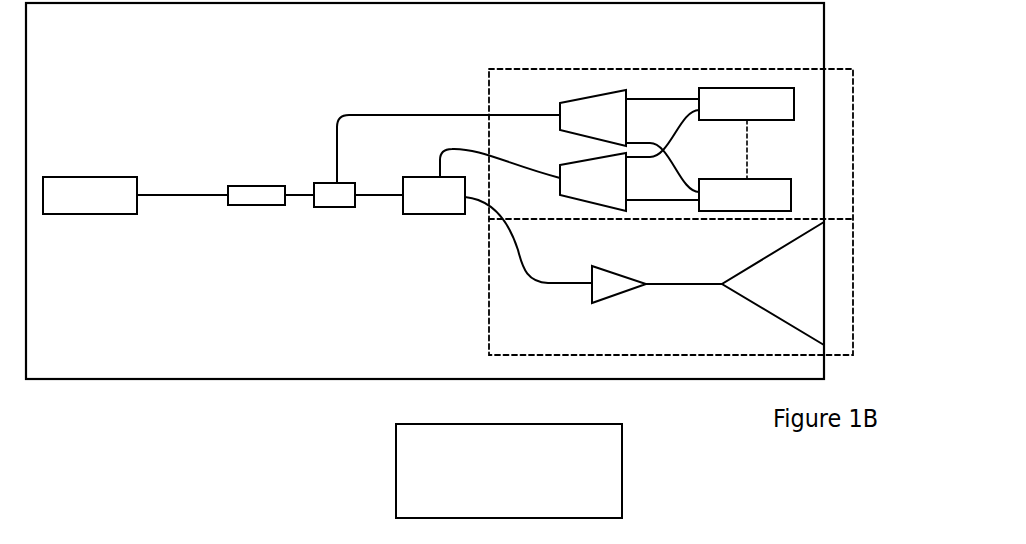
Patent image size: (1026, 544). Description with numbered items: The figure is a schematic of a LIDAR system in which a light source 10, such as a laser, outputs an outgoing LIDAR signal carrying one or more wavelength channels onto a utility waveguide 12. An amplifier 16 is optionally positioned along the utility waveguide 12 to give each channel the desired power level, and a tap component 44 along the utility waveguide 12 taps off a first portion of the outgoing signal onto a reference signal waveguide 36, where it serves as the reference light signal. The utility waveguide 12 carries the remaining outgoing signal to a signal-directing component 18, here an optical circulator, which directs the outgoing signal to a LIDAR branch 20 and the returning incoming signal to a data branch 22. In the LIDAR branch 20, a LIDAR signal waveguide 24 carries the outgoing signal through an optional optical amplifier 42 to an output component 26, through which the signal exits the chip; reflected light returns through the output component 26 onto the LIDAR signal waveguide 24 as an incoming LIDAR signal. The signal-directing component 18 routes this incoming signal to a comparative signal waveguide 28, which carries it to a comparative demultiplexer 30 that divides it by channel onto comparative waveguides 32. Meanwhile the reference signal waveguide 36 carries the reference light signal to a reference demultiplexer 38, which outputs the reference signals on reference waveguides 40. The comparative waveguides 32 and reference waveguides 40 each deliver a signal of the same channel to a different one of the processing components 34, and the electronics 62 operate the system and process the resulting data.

The light source 10 is at (92, 177).
The utility waveguide 12 is at (298, 205).
The amplifier 16 is at (242, 186).
The tap component 44 is at (326, 183).
The signal-directing component 18 is at (422, 214).
The reference signal waveguide 36 is at (420, 115).
The comparative demultiplexer 30 is at (575, 162).
The comparative signal waveguide 28 is at (503, 172).
The reference demultiplexer 38 is at (580, 95).
The comparative waveguides 32 is at (674, 123).
The reference waveguides 40 is at (665, 99).
The processing components 34 is at (758, 88).
The data branch 22 is at (842, 69).
The LIDAR branch 20 is at (853, 246).
The LIDAR signal waveguide 24 is at (670, 282).
The optical amplifier 42 is at (612, 266).
The output component 26 is at (738, 294).
The electronics 62 is at (396, 452).